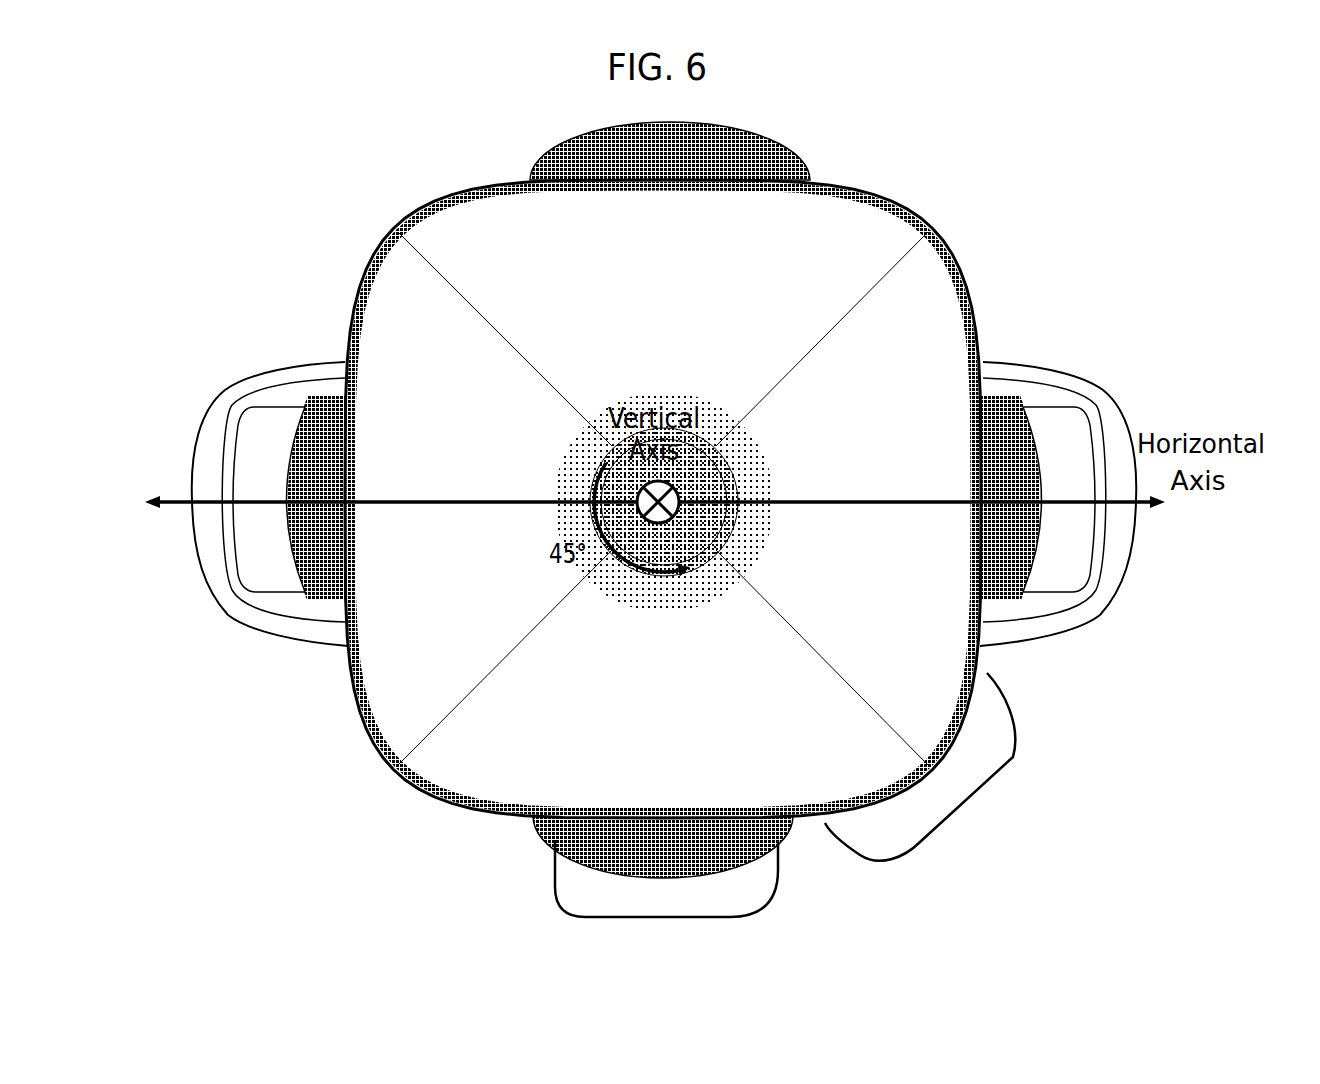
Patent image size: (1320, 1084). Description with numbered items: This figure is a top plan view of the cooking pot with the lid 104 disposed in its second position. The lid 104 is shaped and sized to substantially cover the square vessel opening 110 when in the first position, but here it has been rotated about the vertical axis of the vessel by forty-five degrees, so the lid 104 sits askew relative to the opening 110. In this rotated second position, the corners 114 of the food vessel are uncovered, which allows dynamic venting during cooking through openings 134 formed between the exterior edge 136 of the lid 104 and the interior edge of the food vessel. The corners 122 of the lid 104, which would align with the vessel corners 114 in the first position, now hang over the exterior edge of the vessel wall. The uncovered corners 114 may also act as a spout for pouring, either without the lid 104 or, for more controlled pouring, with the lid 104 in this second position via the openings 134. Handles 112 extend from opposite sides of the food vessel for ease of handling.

The lid 104 is at (966, 220).
The opening 110 is at (608, 168).
The handles 112 is at (1041, 642).
The corners 114 is at (663, 886).
The corners 122 is at (920, 767).
The openings 134 is at (330, 450).
The exterior edge 136 is at (437, 205).